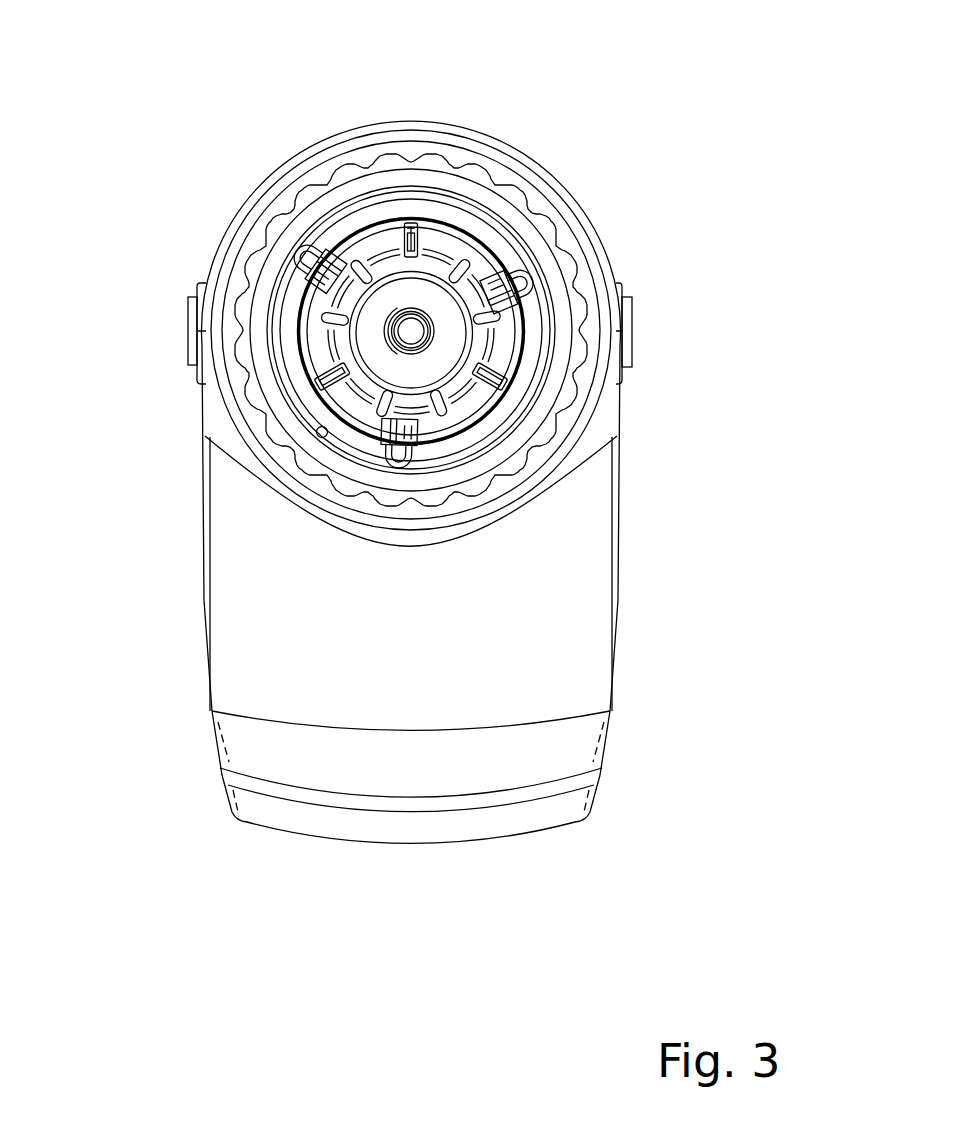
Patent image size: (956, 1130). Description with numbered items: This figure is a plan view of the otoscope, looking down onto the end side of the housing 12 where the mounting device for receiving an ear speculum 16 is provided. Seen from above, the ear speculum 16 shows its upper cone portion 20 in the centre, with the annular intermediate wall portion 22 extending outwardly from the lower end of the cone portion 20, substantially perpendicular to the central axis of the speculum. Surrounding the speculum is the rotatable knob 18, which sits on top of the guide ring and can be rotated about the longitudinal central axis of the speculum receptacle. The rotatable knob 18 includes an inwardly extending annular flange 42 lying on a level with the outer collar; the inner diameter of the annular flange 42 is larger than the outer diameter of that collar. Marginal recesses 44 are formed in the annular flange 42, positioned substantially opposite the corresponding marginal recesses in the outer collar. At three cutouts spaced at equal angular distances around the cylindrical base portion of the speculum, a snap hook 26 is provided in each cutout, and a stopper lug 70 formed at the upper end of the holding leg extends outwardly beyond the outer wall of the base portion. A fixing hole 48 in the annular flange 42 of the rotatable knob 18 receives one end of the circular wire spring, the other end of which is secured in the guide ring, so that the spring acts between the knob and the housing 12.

The housing 12 is at (203, 612).
The ear speculum 16 is at (343, 223).
The rotatable knob 18 is at (405, 162).
The cone portion 20 is at (447, 336).
The intermediate wall portion 22 is at (315, 320).
The snap hook 26 is at (407, 448).
The annular flange 42 is at (483, 227).
The marginal recesses 44 is at (527, 268).
The fixing hole 48 is at (316, 433).
The stopper lug 70 is at (520, 282).